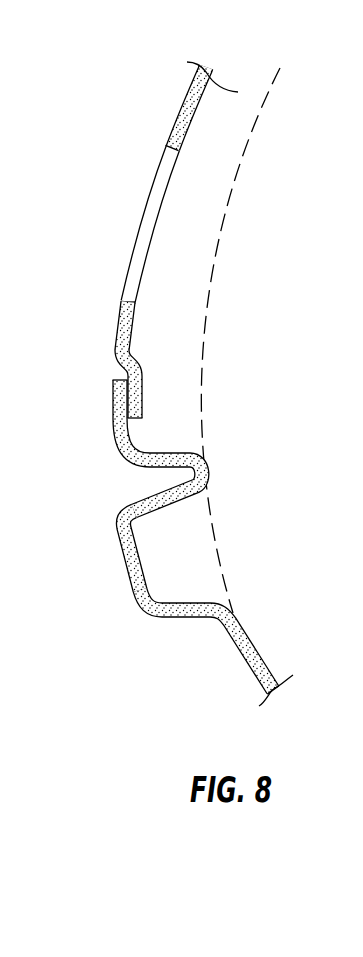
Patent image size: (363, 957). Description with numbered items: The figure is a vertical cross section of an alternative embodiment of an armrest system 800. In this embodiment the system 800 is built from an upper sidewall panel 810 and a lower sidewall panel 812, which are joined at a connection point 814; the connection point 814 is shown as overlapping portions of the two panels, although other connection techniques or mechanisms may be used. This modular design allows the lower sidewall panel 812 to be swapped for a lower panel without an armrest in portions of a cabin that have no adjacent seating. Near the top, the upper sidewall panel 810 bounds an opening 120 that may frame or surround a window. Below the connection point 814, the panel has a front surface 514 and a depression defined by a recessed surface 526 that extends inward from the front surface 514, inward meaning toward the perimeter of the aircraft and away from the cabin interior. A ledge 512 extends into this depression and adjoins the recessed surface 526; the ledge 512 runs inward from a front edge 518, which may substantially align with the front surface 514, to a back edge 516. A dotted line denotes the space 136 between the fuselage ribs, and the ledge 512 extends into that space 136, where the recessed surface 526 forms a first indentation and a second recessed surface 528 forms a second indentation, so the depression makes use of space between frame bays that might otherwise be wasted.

The armrest system 800 is at (98, 59).
The space 136 is at (207, 138).
The opening 120 is at (152, 238).
The recessed surface 526 is at (147, 316).
The upper sidewall panel 810 is at (146, 360).
The connection point 814 is at (116, 367).
The back edge 516 is at (143, 437).
The ledge 512 is at (194, 440).
The front edge 518 is at (207, 472).
The second recessed surface 528 is at (156, 564).
The lower sidewall panel 812 is at (159, 560).
The front surface 514 is at (258, 637).